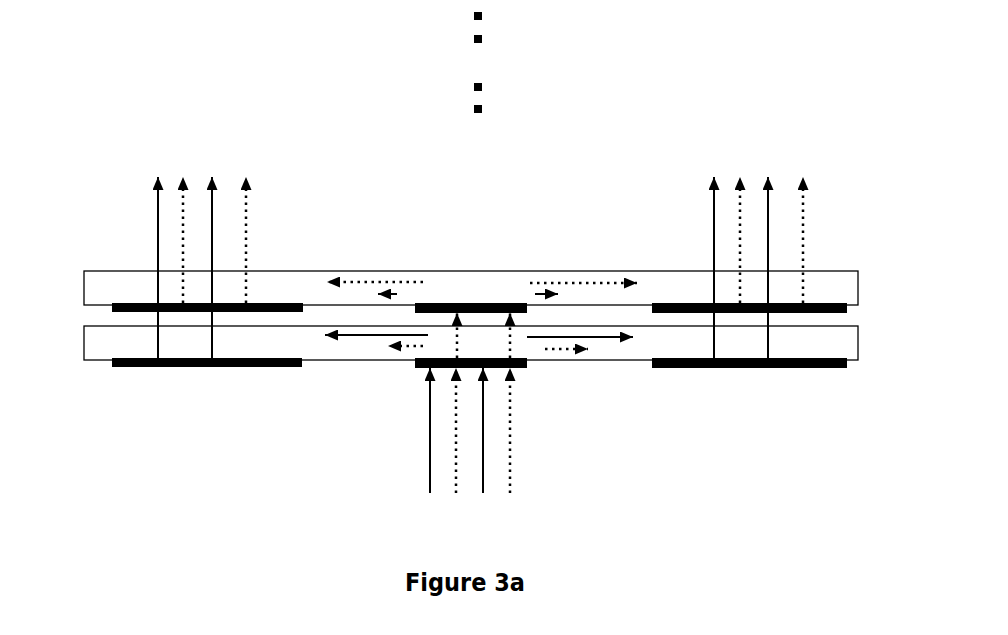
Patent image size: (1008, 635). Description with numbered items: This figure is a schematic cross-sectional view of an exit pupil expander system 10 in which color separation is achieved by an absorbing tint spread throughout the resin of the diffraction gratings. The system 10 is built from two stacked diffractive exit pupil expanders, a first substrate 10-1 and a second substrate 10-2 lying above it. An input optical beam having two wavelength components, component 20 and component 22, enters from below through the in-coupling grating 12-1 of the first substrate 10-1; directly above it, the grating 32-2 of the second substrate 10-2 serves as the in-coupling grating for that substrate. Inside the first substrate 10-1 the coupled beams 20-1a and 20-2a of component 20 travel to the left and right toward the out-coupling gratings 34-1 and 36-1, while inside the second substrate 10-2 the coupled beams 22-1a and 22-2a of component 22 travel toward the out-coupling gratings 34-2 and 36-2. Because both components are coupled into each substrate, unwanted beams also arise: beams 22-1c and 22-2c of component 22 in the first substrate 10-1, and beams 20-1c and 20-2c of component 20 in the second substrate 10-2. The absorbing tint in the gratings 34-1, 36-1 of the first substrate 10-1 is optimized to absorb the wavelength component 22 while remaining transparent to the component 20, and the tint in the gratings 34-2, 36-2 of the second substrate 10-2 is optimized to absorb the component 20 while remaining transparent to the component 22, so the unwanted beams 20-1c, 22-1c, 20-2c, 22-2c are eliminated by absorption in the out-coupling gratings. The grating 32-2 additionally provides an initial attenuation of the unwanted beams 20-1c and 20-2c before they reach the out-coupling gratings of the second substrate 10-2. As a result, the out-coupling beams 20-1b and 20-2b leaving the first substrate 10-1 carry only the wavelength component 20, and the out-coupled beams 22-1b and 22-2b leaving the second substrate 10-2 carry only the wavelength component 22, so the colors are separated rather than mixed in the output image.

The exit pupil expander system 10 is at (503, 90).
The first substrate 10-1 is at (102, 338).
The second substrate 10-2 is at (102, 292).
The in-coupling grating 12-1 is at (515, 368).
The central coupling element of second layer 32-2 is at (478, 303).
The out-coupling grating 34-1 is at (198, 367).
The out-coupling grating 34-2 is at (147, 302).
The out-coupling grating 36-1 is at (775, 370).
The out-coupling grating 36-2 is at (812, 303).
The wavelength component 20 is at (428, 465).
The wavelength component 22 is at (510, 467).
The optical beam 20-1a is at (350, 337).
The out-coupling beam 20-1b is at (153, 208).
The unwanted optical beam 20-1c is at (393, 292).
The optical beam 20-2a is at (608, 338).
The out-coupling beam 20-2b is at (713, 197).
The unwanted optical beam 20-2c is at (557, 290).
The optical beam 22-1a is at (358, 280).
The second beam portion exiting left 22-1b is at (247, 207).
The unwanted optical beam 22-1c is at (408, 348).
The optical beam 22-2a is at (565, 282).
The second beam portion exiting right 22-2b is at (800, 202).
The unwanted optical beam 22-2c is at (553, 350).